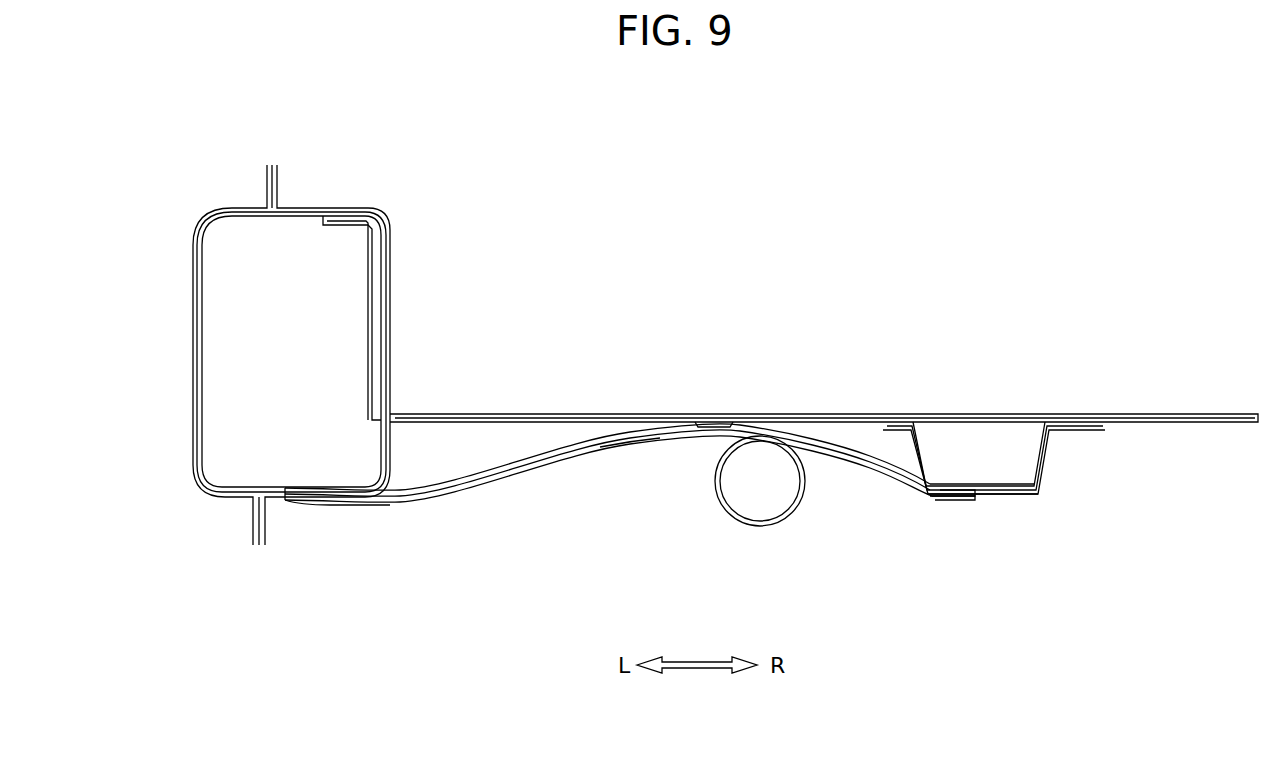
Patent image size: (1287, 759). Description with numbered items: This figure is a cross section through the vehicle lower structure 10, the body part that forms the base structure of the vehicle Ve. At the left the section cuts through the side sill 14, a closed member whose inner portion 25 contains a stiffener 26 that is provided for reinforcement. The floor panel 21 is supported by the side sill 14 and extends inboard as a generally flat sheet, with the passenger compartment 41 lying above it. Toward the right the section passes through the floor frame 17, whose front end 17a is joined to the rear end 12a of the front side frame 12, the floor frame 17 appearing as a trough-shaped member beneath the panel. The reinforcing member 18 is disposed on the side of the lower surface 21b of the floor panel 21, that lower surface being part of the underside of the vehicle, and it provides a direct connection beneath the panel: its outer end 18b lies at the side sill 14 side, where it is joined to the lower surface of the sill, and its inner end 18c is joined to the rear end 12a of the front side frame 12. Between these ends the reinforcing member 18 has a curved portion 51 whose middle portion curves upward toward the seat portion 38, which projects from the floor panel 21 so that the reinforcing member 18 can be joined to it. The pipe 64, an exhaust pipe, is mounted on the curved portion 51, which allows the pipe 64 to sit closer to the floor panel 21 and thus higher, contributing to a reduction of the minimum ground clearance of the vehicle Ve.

The vehicle Ve is at (197, 150).
The vehicle lower structure 10 is at (197, 225).
The side sill 14 is at (193, 318).
The stiffener 26 is at (392, 252).
The inner portion 25 is at (301, 365).
The passenger compartment 41 is at (756, 273).
The floor panel 21 is at (596, 413).
The lower surface 21b is at (530, 422).
The seat portion 38 is at (715, 426).
The reinforcing member 18 is at (450, 492).
The outer end 18b is at (350, 497).
The inner end 18c is at (967, 505).
The curved portion 51 is at (638, 447).
The floor frame 17 is at (1047, 468).
The front end 17a is at (994, 458).
The front side frame 12 is at (995, 525).
The rear end 12a is at (1015, 497).
The pipe 64 is at (750, 526).